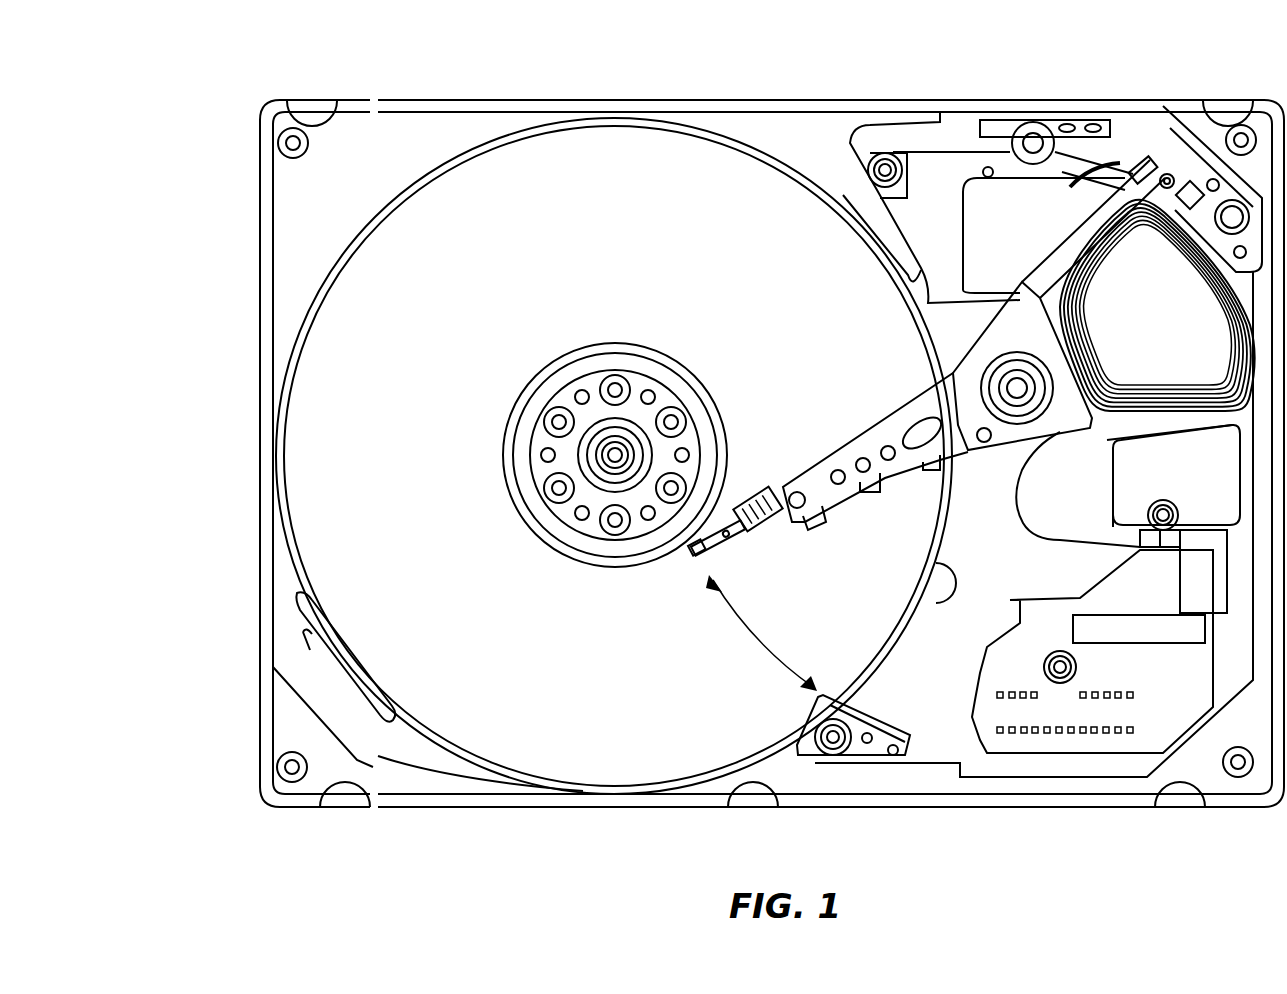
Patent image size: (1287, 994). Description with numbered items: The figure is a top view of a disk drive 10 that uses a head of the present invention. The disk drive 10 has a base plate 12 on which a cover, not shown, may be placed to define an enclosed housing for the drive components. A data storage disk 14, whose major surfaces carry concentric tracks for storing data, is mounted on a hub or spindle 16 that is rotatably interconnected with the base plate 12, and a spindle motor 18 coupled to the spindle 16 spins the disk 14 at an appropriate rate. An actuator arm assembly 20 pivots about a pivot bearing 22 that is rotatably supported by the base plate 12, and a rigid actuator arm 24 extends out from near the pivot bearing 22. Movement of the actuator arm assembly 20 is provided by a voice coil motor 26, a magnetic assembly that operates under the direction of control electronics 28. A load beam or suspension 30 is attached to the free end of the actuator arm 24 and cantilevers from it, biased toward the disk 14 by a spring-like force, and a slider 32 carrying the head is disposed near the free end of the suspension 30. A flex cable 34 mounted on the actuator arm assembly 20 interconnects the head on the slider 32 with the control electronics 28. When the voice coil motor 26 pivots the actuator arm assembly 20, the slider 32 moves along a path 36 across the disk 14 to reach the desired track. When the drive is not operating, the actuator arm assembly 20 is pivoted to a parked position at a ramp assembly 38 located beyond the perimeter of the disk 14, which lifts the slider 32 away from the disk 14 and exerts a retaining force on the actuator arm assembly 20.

The disk drive 10 is at (188, 202).
The base plate 12 is at (483, 100).
The data storage disk 14 is at (630, 153).
The hub or spindle 16 is at (648, 360).
The spindle motor 18 is at (590, 425).
The actuator arm assembly 20 is at (880, 410).
The pivot bearing 22 is at (1010, 417).
The actuator arm 24 is at (853, 493).
The voice coil motor 26 is at (1157, 305).
The control electronics 28 is at (1068, 740).
The load beam or suspension 30 is at (738, 508).
The slider 32 is at (685, 568).
The flex cable 34 is at (1026, 545).
The path 36 is at (752, 638).
The ramp assembly 38 is at (862, 765).